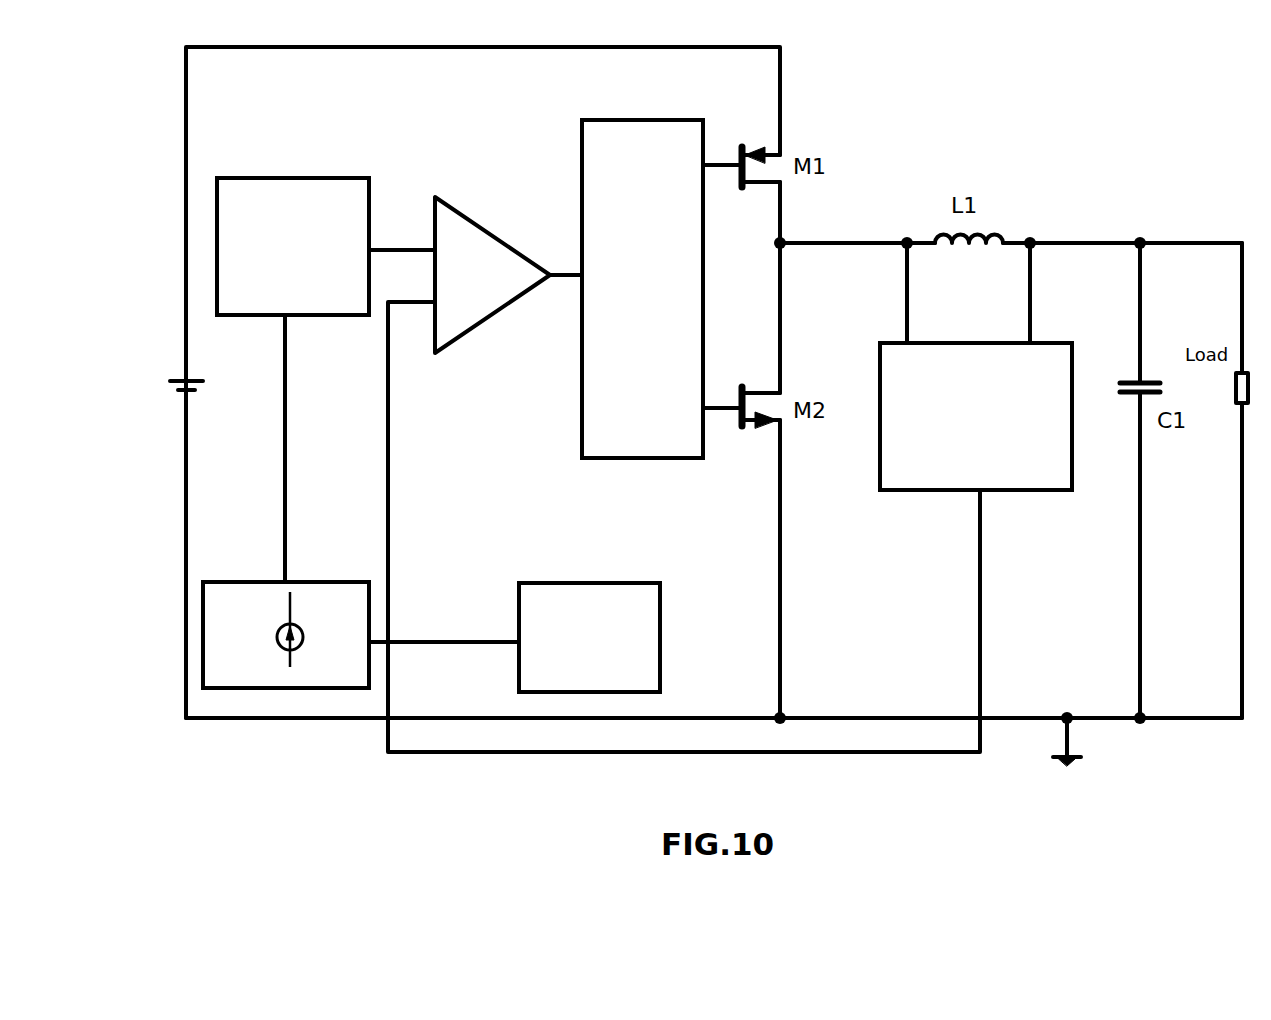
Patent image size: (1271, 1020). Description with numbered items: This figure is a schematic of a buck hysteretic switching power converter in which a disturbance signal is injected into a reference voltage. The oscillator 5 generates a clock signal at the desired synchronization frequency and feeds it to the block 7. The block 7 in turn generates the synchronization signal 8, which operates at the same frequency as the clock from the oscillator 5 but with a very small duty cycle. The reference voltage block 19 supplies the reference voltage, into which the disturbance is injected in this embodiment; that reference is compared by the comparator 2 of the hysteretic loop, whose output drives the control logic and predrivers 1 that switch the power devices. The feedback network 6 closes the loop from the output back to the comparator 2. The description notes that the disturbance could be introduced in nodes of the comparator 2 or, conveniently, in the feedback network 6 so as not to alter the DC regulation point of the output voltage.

The control logic and predrivers 1 is at (627, 120).
The comparator 2 is at (518, 295).
The oscillator 5 is at (600, 583).
The feedback network 6 is at (1052, 343).
The block 7 is at (310, 582).
The synchronization signal 8 is at (285, 519).
The reference voltage 19 is at (290, 178).